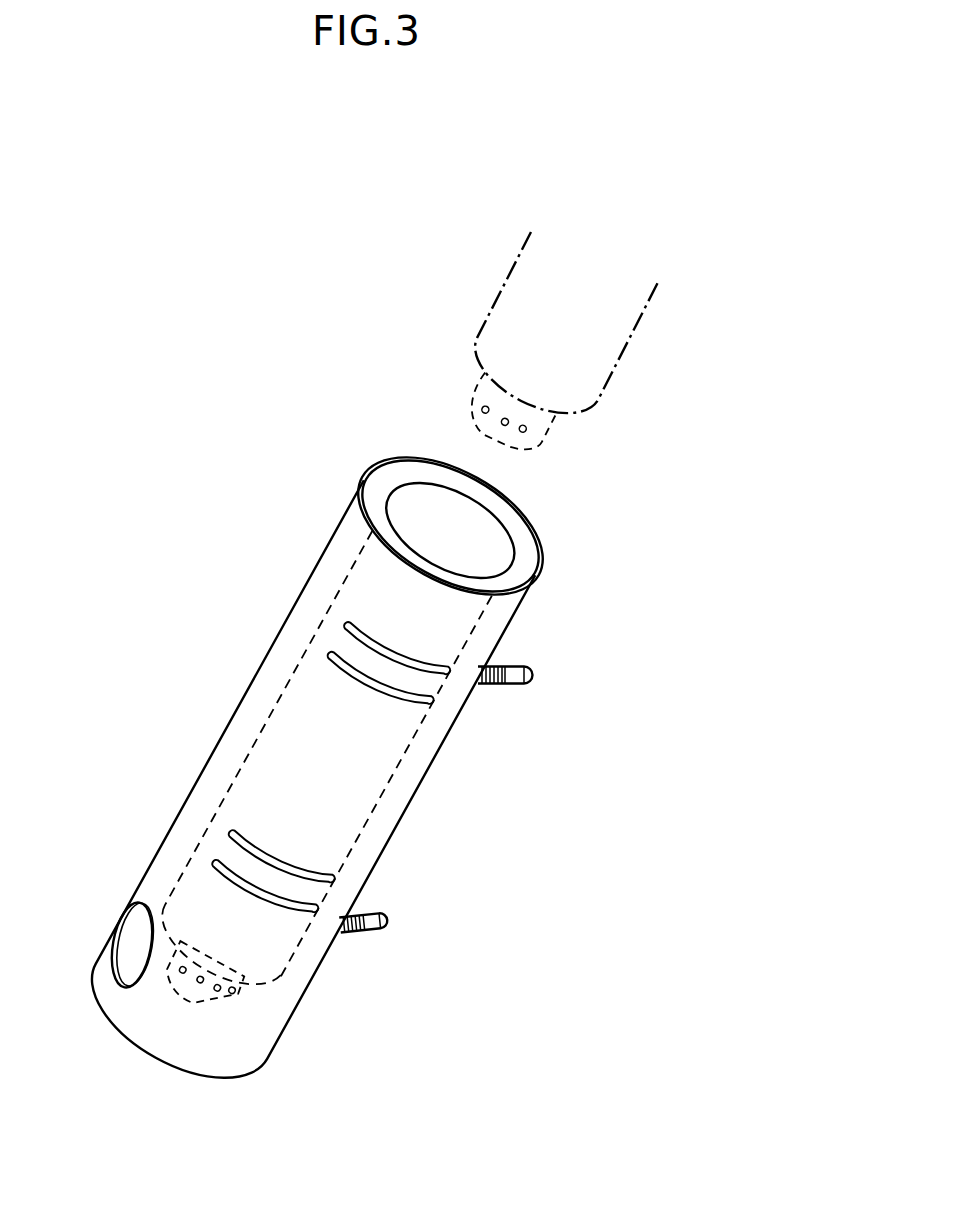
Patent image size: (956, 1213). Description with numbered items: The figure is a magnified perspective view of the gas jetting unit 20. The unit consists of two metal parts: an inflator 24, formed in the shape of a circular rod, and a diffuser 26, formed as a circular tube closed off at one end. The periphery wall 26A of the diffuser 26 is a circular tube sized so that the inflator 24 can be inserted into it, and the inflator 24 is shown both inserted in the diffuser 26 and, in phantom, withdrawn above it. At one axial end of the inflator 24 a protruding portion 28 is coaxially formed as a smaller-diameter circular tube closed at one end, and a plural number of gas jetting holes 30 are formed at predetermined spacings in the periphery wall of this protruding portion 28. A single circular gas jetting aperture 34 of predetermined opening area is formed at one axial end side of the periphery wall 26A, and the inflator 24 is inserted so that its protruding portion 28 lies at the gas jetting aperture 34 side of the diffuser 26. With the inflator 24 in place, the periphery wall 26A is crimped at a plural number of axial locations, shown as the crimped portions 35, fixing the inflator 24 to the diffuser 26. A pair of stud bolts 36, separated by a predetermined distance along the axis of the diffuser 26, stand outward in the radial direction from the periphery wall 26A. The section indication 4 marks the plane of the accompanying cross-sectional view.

The gas jetting unit 20 is at (156, 606).
The inflator 24 is at (413, 490).
The diffuser 26 is at (186, 794).
The periphery wall 26A is at (188, 825).
The protruding portion 28 is at (512, 445).
The gas jetting holes 30 is at (546, 444).
The gas jetting aperture 34 is at (142, 927).
The crimped portions 35 is at (417, 670).
The stud bolts 36 is at (533, 677).
The section line 4- 4 is at (305, 453).